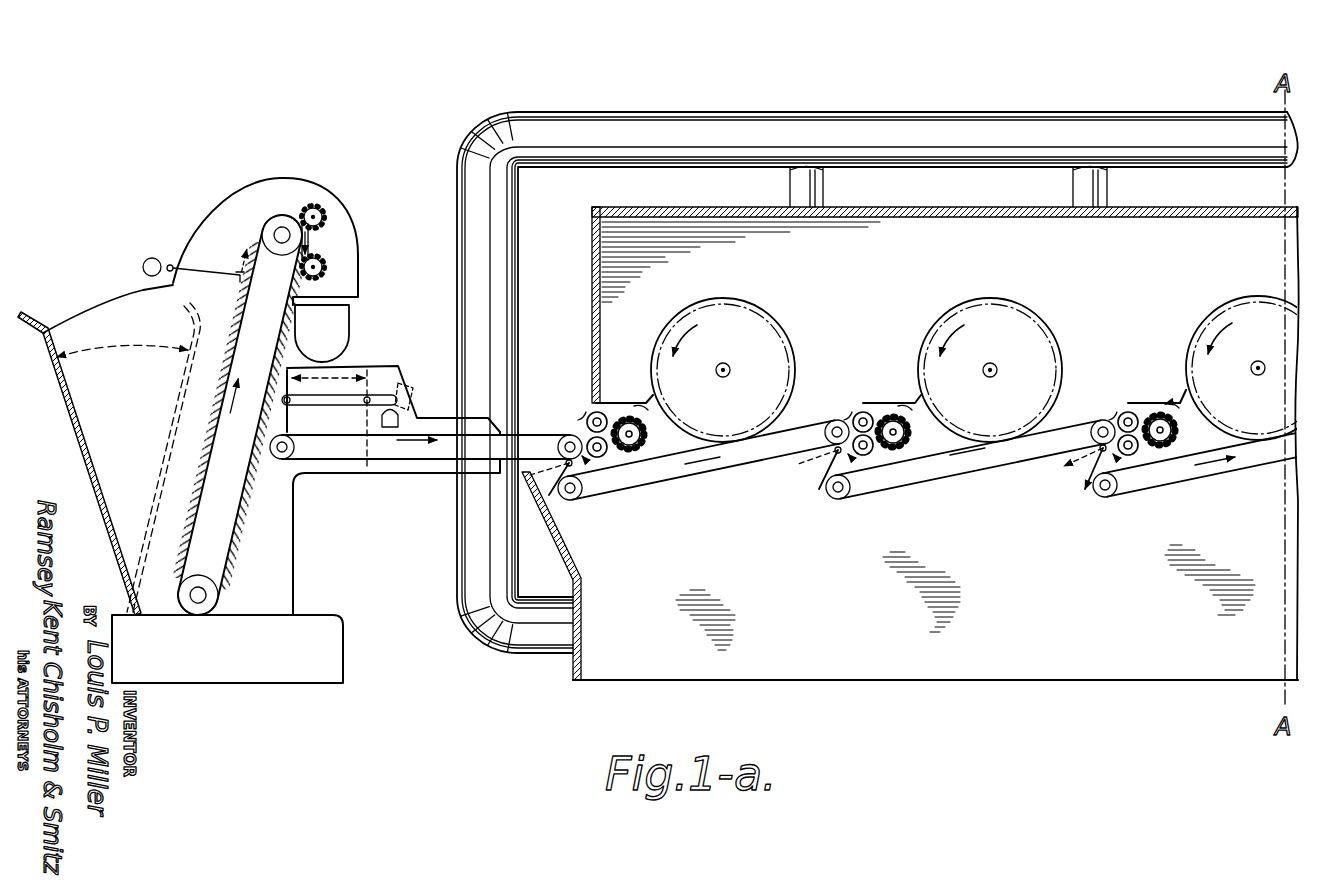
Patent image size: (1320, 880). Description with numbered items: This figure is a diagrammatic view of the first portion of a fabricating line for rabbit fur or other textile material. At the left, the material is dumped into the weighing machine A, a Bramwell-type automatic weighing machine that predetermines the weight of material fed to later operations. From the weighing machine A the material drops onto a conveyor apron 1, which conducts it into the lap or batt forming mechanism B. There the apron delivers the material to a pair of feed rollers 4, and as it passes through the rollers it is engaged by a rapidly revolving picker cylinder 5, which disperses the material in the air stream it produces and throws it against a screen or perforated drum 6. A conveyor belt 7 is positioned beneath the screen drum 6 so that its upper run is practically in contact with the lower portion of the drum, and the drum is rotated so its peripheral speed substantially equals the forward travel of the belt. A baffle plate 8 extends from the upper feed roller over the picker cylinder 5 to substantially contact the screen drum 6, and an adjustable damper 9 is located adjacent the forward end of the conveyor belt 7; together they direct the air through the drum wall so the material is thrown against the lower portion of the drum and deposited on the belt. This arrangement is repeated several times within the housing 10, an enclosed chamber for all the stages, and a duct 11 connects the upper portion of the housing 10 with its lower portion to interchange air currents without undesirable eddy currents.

The conveyor apron 1 is at (423, 432).
The feed rollers 4 is at (584, 428).
The picker cylinder 5 is at (646, 436).
The screen drum 6 is at (785, 338).
The conveyor belt 7 is at (796, 428).
The baffle plate 8 is at (622, 402).
The adjustable damper 9 is at (553, 500).
The housing 10 is at (730, 208).
The duct 11 is at (840, 122).
The weighing machine A is at (250, 178).
The lap or batt forming mechanism B is at (1008, 102).